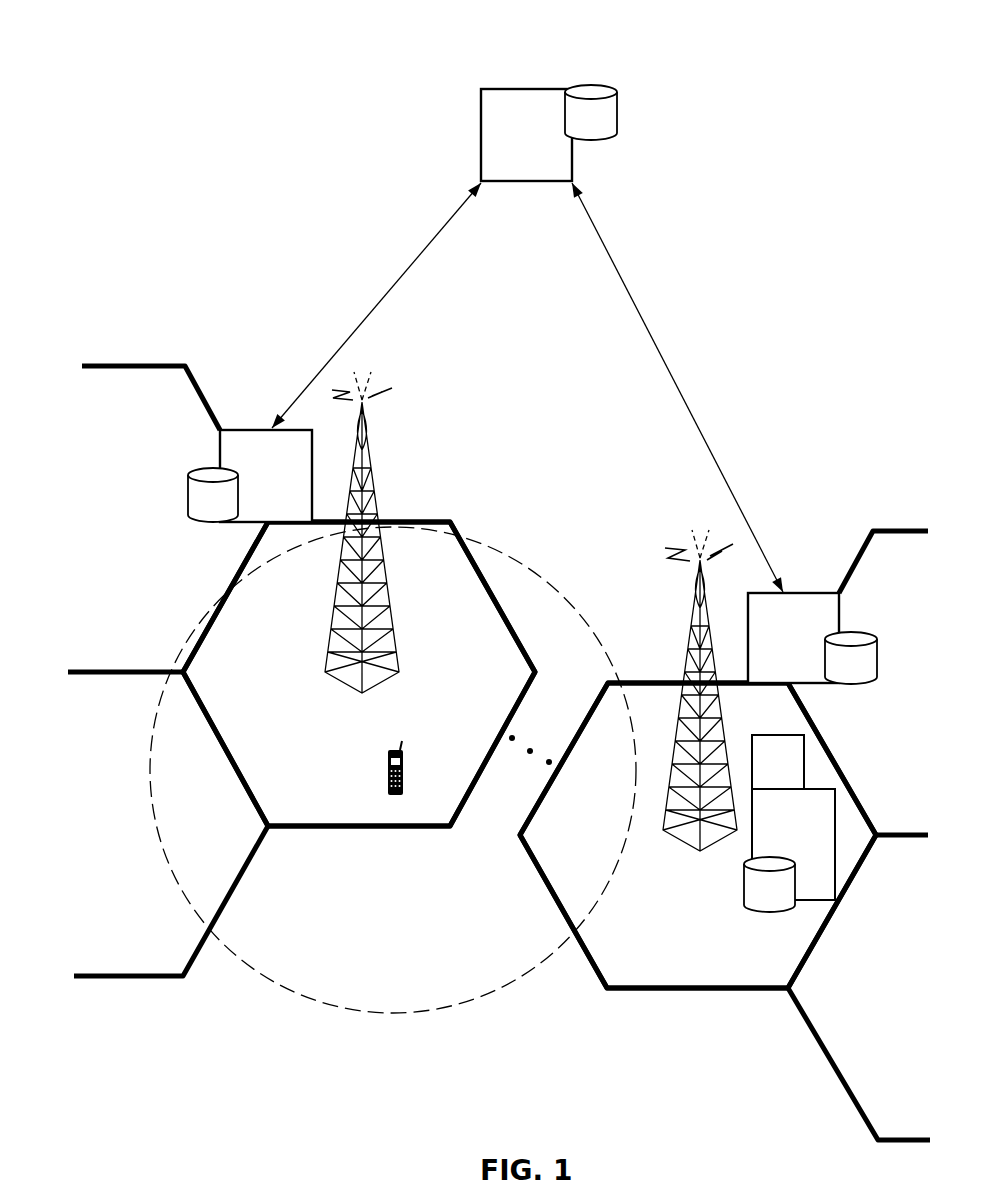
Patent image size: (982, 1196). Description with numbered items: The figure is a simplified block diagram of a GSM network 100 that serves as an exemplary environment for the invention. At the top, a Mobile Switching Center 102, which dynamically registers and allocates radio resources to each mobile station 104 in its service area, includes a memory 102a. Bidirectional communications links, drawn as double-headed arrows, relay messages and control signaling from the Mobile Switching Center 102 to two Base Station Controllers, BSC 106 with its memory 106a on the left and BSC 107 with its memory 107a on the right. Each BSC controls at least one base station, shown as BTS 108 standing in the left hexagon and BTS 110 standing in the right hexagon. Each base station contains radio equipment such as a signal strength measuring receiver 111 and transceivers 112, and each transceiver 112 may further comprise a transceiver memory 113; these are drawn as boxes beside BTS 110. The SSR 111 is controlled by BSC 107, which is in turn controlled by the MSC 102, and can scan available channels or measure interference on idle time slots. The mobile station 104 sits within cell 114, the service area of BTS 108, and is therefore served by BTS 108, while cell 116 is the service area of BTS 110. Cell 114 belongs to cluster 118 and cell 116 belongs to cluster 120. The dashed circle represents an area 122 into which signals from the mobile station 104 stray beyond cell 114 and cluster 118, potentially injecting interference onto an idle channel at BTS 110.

The GSM network 100 is at (822, 84).
The Mobile Switching Center 102 is at (526, 135).
The memory 102a is at (591, 112).
The mobile station 104 is at (396, 779).
The Base Station Controller 106 is at (266, 476).
The memory 106a is at (213, 495).
The Base Station Controller 107 is at (793, 638).
The memory 107a is at (851, 658).
The Base Station 108 is at (362, 546).
The Base Station 110 is at (700, 704).
The signal strength measuring receiver 111 is at (778, 762).
The transceiver 112 is at (793, 844).
The transceiver memory 113 is at (769, 884).
The cell 114 is at (359, 647).
The cell 116 is at (698, 877).
The cluster 118 is at (280, 854).
The cluster 120 is at (762, 1020).
The area 122 is at (397, 741).